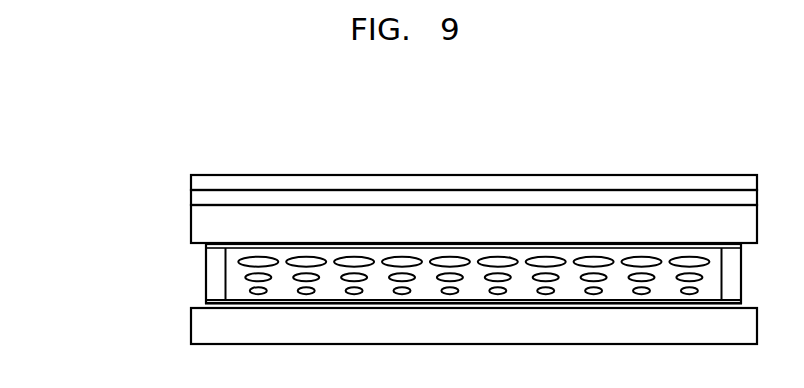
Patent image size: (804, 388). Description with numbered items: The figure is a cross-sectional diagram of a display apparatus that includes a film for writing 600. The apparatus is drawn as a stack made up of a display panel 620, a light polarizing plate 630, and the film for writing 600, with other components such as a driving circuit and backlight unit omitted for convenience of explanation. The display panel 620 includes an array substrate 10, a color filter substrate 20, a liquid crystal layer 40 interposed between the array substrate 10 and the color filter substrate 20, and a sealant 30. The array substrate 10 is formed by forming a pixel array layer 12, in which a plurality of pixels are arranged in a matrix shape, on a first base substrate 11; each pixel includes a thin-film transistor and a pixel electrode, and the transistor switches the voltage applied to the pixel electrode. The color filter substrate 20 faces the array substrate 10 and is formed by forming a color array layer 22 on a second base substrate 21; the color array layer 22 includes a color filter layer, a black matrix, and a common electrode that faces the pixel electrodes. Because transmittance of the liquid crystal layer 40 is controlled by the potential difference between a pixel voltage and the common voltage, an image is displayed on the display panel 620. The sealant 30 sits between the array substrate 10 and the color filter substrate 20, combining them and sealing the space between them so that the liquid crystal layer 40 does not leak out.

The film for writing 600 is at (198, 183).
The light polarizing plate 630 is at (198, 203).
The color filter substrate 20 is at (127, 217).
The second base substrate 21 is at (197, 226).
The color array layer 22 is at (201, 244).
The sealant 30 is at (212, 278).
The liquid crystal layer 40 is at (571, 261).
The array substrate 10 is at (127, 307).
The pixel array layer 12 is at (212, 304).
The first base substrate 11 is at (198, 330).
The display panel 620 is at (85, 227).